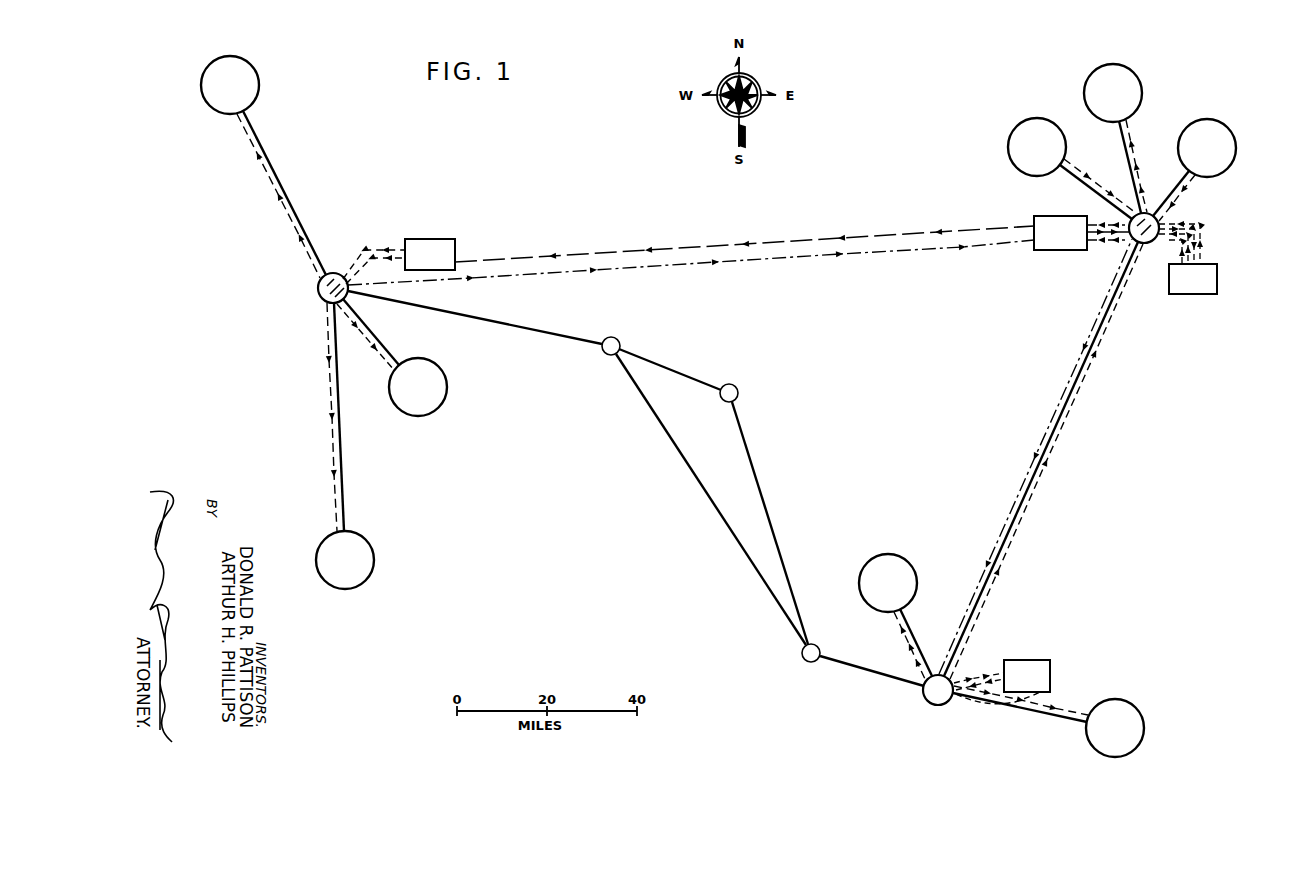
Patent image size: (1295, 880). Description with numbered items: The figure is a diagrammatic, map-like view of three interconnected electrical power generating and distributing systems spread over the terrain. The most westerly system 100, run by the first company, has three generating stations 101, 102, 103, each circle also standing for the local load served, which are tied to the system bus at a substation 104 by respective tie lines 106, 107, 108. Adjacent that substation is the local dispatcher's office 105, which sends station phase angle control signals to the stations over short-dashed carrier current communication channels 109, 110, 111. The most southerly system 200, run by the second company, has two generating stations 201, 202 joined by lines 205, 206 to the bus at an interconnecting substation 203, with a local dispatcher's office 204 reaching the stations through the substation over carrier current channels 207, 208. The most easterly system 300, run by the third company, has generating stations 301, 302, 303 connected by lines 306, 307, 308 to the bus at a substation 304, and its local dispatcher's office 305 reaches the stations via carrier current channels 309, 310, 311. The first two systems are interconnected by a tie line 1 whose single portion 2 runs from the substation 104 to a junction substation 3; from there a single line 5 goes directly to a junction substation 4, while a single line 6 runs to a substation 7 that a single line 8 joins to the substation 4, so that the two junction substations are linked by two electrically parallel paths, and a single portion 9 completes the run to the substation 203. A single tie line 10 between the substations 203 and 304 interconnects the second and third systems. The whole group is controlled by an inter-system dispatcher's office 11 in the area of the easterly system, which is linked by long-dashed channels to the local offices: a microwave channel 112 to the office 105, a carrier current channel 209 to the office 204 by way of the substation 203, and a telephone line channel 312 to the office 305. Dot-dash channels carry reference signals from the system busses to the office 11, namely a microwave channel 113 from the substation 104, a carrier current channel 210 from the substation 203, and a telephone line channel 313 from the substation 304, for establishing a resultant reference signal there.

The tie line 1 is at (743, 464).
The single portion 2 is at (540, 336).
The junction or interconnection point or substation 3 is at (611, 337).
The junction point or substation 4 is at (800, 661).
The single line 5 is at (697, 478).
The single line 6 is at (673, 367).
The junction point or substation 7 is at (739, 389).
The single line 8 is at (762, 491).
The single portion 9 is at (858, 669).
The tie line 10 is at (1047, 463).
The inter-system dispatcher's office 11 is at (1040, 251).
The electrical power generating and distributing system 100 is at (591, 319).
The generating station 101 is at (205, 70).
The generating station 102 is at (447, 378).
The generating station 103 is at (377, 558).
The substation 104 is at (318, 288).
The local dispatcher's office 105 is at (425, 238).
The tie line 106 is at (284, 168).
The tie line 107 is at (380, 336).
The tie line 108 is at (348, 462).
The communication channel 109 is at (297, 214).
The communication channel 110 is at (393, 259).
The communication channel 111 is at (386, 250).
The communication channel 112 is at (758, 240).
The communication channel 113 is at (770, 258).
The electrical power generating and distributing system 200 is at (1008, 498).
The generating station 201 is at (861, 556).
The generating station 202 is at (1146, 720).
The substation 203 is at (928, 704).
The local dispatcher's office 204 is at (1034, 660).
The line 205 is at (915, 626).
The line 206 is at (1026, 718).
The communication channel 207 is at (898, 626).
The communication channel 208 is at (1028, 698).
The carrier current channel 209 is at (1065, 440).
The carrier current channel 210 is at (1062, 397).
The electrical power generating and distributing system 300 is at (1112, 172).
The generating station 301 is at (1089, 70).
The generating station 302 is at (1008, 142).
The generating station 303 is at (1236, 133).
The substation 304 is at (1134, 240).
The local dispatcher's office 305 is at (1218, 280).
The line 306 is at (1118, 150).
The line 307 is at (1062, 177).
The line 308 is at (1164, 193).
The communication channel 309 is at (1133, 148).
The communication channel 310 is at (1093, 184).
The communication channel 311 is at (1189, 186).
The communication channel 312 is at (1183, 260).
The telephone line channel 313 is at (1097, 226).